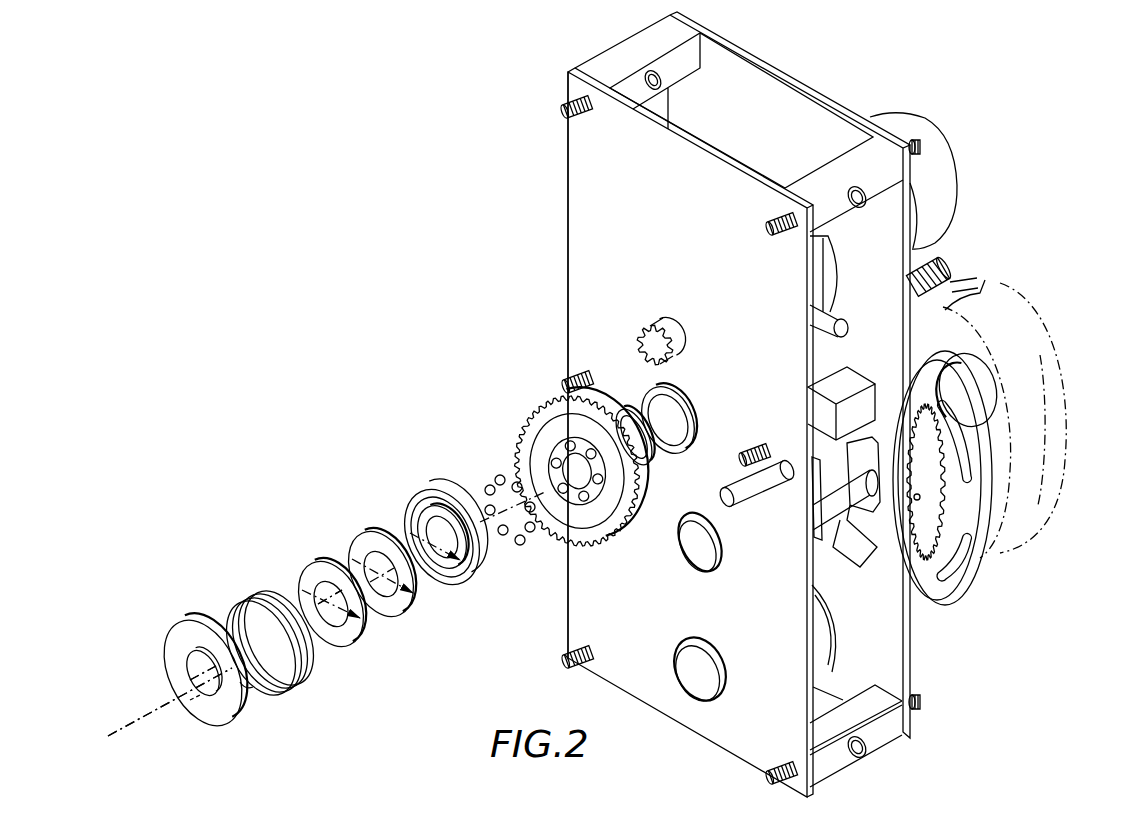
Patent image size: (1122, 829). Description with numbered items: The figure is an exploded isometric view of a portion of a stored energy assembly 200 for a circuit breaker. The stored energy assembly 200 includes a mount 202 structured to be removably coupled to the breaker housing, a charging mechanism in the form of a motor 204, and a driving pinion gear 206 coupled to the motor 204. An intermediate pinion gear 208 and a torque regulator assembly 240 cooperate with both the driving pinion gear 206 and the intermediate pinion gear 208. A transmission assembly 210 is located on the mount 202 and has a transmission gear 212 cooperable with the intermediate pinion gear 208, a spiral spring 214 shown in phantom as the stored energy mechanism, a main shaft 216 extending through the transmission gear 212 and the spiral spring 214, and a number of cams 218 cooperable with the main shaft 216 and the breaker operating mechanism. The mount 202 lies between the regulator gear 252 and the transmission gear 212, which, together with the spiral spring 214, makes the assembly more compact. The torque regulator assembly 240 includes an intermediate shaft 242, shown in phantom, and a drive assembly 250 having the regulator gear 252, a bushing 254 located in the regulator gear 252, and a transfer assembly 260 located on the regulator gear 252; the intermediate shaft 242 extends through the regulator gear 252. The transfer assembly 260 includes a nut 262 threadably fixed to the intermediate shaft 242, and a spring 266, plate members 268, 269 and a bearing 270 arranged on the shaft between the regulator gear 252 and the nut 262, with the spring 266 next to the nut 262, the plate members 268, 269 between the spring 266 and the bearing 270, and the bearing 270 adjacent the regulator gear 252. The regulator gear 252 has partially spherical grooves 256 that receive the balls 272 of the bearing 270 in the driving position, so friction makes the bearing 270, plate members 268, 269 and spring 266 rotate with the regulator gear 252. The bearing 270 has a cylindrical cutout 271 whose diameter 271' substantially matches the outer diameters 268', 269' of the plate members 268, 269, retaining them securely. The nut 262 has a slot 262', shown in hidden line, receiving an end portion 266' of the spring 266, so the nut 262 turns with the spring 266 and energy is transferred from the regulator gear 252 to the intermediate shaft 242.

The stored energy assembly 200 is at (424, 258).
The mount 202 is at (557, 172).
The motor 204 is at (873, 118).
The driving pinion gear 206 is at (632, 347).
The intermediate pinion gear 208 is at (943, 267).
The transmission assembly 210 is at (940, 647).
The transmission gear 212 is at (917, 513).
The spiral spring 214 is at (983, 293).
The main shaft 216 is at (993, 387).
The cams 218 is at (843, 667).
The torque regulator assembly 240 is at (320, 763).
The intermediate shaft 242 is at (137, 707).
The drive assembly 250 is at (310, 727).
The regulator gear 252 is at (537, 433).
The bushing 254 is at (655, 450).
The grooves 256 is at (590, 452).
The transfer assembly 260 is at (243, 480).
The nut 262 is at (196, 645).
The slot 262' is at (183, 726).
The spring 266 is at (257, 611).
The end portion 266' is at (279, 703).
The plate member 268 is at (332, 645).
The outer diameter 268' is at (311, 571).
The plate member 269 is at (382, 612).
The outer diameter 269' is at (367, 547).
The bearing 270 is at (433, 480).
The cutout 271 is at (443, 576).
The diameter 271' is at (418, 516).
The balls 272 is at (492, 515).